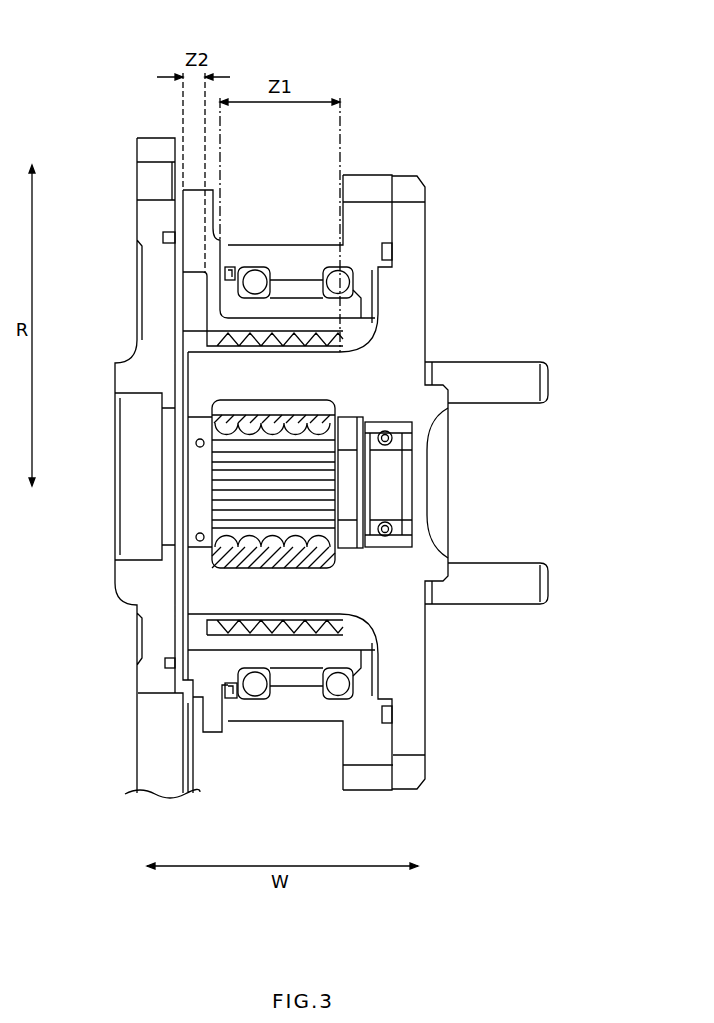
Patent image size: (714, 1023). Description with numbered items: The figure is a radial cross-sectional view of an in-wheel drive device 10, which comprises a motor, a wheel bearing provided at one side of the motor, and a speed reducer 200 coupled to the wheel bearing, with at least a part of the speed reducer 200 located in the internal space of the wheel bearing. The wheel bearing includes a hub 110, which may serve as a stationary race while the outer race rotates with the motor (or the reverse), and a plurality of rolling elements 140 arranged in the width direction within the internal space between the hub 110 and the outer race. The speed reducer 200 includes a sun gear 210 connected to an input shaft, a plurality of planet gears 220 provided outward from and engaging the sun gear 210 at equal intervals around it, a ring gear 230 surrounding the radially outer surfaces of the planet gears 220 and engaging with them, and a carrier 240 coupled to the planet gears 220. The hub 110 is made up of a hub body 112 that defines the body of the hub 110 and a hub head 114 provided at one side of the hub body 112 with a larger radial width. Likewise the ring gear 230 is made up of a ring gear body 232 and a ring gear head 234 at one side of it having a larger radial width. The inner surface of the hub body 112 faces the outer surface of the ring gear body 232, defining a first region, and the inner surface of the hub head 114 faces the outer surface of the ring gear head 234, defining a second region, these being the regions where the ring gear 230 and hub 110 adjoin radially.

The in-wheel drive device 10 is at (69, 32).
The hub 110 is at (428, 102).
The hub body 112 is at (287, 307).
The hub head 114 is at (200, 204).
The rolling element 140 is at (255, 692).
The speed reducer 200 is at (608, 152).
The sun gear 210 is at (337, 432).
The planet gear 220 is at (333, 564).
The ring gear 230 is at (332, 330).
The ring gear body 232 is at (264, 334).
The ring gear head 234 is at (197, 310).
The carrier 240 is at (405, 660).